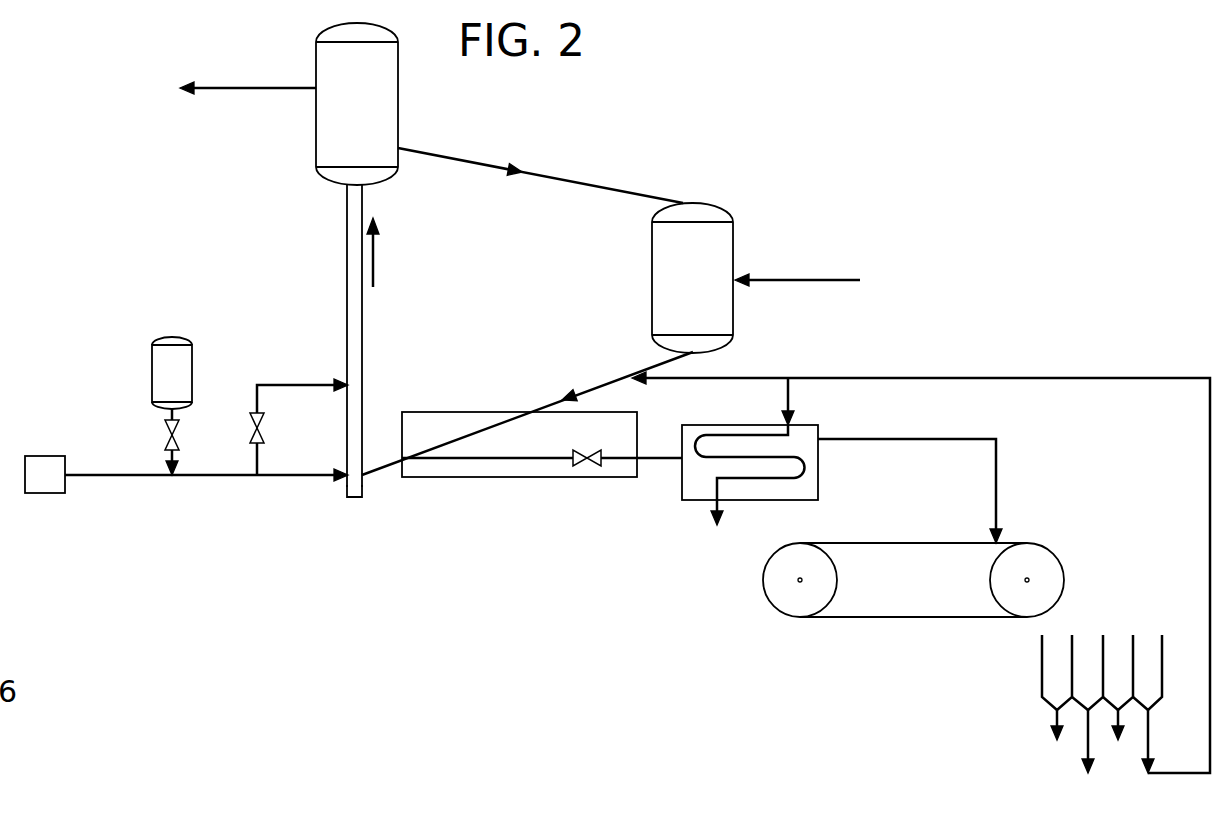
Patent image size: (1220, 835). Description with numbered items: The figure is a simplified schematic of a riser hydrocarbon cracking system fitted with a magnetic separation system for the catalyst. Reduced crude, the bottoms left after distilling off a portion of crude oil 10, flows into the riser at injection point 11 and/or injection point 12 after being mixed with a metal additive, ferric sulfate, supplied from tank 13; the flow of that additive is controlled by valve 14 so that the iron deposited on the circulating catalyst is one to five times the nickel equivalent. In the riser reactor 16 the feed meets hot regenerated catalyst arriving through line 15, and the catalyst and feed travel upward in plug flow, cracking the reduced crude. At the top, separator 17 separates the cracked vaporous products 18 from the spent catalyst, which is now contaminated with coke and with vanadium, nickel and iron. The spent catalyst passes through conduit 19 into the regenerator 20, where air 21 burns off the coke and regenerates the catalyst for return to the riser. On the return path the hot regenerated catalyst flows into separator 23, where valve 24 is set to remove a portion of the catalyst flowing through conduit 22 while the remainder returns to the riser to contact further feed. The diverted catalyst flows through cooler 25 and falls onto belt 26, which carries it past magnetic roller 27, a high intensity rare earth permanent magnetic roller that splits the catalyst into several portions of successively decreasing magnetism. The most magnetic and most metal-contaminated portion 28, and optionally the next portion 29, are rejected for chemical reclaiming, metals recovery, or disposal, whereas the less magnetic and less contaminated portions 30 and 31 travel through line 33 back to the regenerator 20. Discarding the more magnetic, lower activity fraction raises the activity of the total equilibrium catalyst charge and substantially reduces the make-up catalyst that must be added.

The crude oil 10 is at (186, 474).
The injection point 11 is at (323, 507).
The injection point 12 is at (299, 411).
The tank 13 is at (172, 373).
The valve 14 is at (144, 439).
The line 15 is at (527, 391).
The riser reactor 16 is at (347, 265).
The separator 17 is at (357, 104).
The cracked vaporous products 18 is at (248, 74).
The conduit 19 is at (540, 167).
The regenerator 20 is at (712, 295).
The air 21 is at (822, 279).
The conduit 22 is at (519, 424).
The separator 23 is at (565, 449).
The valve 24 is at (589, 463).
The cooler 25 is at (842, 460).
The belt 26 is at (920, 552).
The magnetic roller 27 is at (1044, 560).
The most magnetic portion 28 is at (1049, 706).
The second portion 29 is at (1081, 723).
The third portion 30 is at (1116, 706).
The least magnetic portion 31 is at (1157, 723).
The line 33 is at (921, 555).